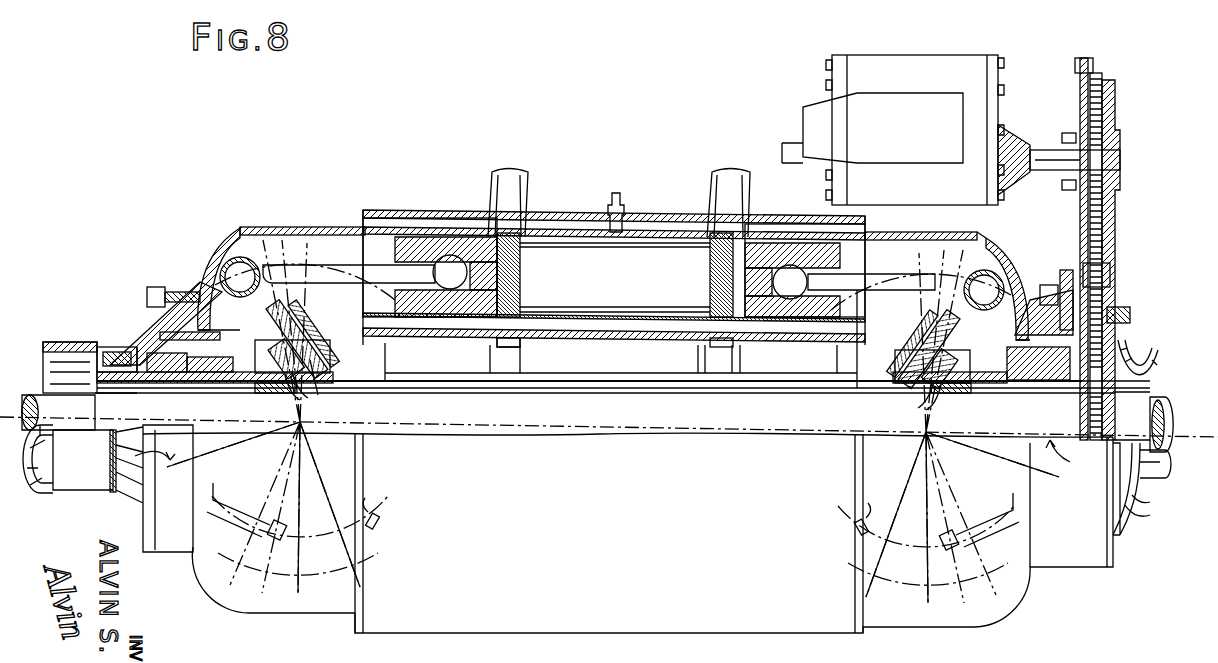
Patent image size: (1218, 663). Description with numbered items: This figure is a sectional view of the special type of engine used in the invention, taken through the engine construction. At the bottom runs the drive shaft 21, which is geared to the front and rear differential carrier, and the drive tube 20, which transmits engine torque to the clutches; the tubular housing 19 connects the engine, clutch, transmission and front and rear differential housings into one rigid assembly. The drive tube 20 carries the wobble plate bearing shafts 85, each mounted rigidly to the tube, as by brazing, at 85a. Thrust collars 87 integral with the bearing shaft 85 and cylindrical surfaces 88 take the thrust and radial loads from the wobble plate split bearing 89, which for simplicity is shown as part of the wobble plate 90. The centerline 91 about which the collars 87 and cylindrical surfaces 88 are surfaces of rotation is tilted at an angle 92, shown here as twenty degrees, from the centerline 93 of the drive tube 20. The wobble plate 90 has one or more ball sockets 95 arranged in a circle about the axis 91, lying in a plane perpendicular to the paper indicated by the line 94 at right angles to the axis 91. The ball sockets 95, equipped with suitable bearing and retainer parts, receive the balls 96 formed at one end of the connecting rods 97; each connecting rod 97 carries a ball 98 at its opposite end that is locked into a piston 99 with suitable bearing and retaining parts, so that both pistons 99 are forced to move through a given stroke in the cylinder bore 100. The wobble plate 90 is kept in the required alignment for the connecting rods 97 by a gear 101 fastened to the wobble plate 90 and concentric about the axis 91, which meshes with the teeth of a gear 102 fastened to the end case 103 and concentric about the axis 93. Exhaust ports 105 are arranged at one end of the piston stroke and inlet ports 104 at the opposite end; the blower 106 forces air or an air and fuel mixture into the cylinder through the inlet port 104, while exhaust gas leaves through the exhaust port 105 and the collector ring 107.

The tubular housing 19 is at (1140, 350).
The drive tube 20 is at (1150, 470).
The drive shaft 21 is at (48, 405).
The wobble plate bearing shaft 85 is at (345, 378).
The brazed mounting 85a is at (158, 375).
The thrust collar 87 is at (262, 392).
The cylindrical surface 88 is at (295, 385).
The wobble plate split bearing 89 is at (318, 340).
The wobble plate 90 is at (272, 300).
The centerline 91 is at (230, 442).
The tilt angle 92 is at (597, 529).
The centerline of drive tube 93 is at (680, 428).
The socket plane line 94 is at (340, 540).
The ball socket 95 is at (230, 260).
The ball 96 is at (253, 262).
The connecting rod 97 is at (363, 285).
The ball 98 is at (445, 260).
The piston 99 is at (458, 236).
The cylinder bore 100 is at (680, 240).
The gear 101 is at (290, 312).
The gear 102 is at (270, 320).
The end case 103 is at (185, 292).
The inlet port 104 is at (708, 282).
The exhaust port 105 is at (520, 285).
The blower 106 is at (880, 63).
The collector ring 107 is at (512, 340).